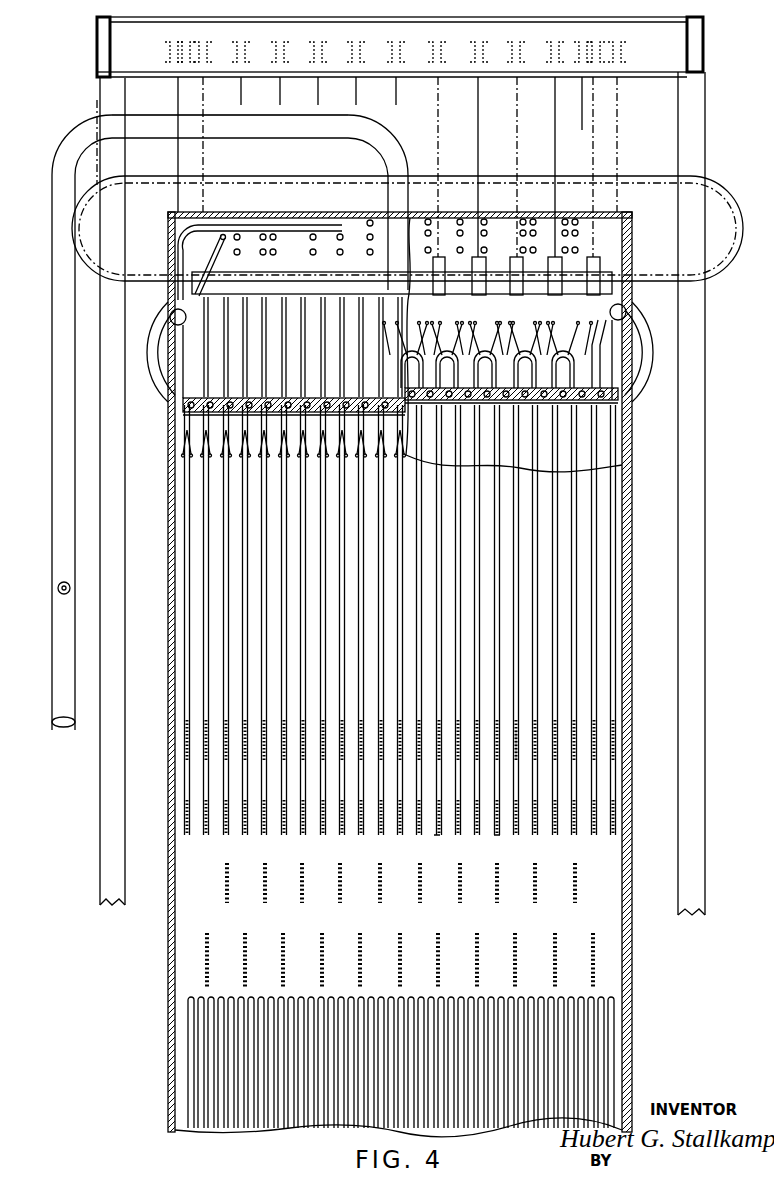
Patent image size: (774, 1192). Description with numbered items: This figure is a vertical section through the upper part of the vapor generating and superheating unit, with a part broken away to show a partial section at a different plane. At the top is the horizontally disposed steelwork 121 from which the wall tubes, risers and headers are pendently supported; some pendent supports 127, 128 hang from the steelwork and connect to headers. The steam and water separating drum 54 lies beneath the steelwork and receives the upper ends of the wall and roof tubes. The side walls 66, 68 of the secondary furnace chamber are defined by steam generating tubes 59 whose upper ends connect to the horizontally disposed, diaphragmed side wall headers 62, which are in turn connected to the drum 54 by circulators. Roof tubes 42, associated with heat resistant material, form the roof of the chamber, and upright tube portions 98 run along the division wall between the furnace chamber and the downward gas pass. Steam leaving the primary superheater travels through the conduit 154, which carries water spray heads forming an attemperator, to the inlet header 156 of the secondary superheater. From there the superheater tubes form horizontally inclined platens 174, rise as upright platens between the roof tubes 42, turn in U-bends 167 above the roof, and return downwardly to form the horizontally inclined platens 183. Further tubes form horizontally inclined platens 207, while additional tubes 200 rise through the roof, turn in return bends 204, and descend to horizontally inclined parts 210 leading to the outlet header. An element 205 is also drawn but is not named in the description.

The steelwork 121 is at (664, 53).
The pendent support 128 is at (618, 132).
The steam and water separating drum 54 is at (641, 175).
The pendent support 127 is at (178, 155).
The conduit 154 is at (55, 375).
The inlet header of the secondary superheater 156 is at (318, 262).
The side wall header 62 is at (170, 316).
The return bends 204 is at (240, 365).
The tube sheet plate 205 is at (200, 405).
The roof tubes 42 is at (205, 412).
The side wall 66 is at (172, 510).
The side wall 68 is at (628, 598).
The side wall steam generating tubes 59 is at (625, 492).
The U-bends 167 is at (405, 350).
The tubes 200 is at (512, 758).
The horizontally inclined parts 210 is at (516, 740).
The horizontally inclined platens 207 is at (497, 838).
The horizontally inclined platens 183 is at (302, 863).
The horizontally inclined platen 174 is at (438, 933).
The upright tube portions 98 is at (420, 1010).